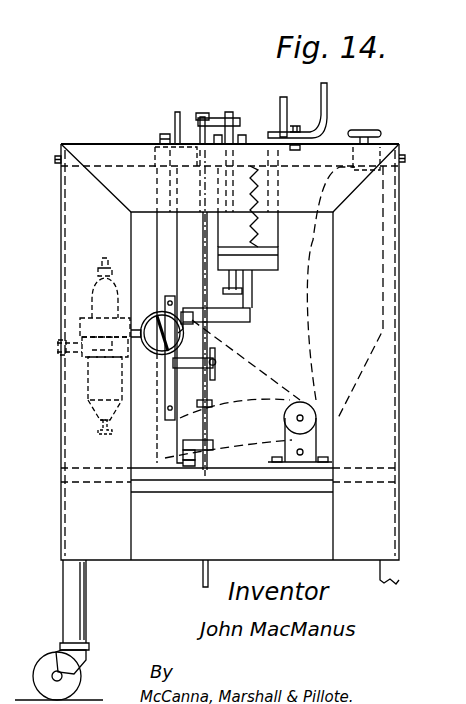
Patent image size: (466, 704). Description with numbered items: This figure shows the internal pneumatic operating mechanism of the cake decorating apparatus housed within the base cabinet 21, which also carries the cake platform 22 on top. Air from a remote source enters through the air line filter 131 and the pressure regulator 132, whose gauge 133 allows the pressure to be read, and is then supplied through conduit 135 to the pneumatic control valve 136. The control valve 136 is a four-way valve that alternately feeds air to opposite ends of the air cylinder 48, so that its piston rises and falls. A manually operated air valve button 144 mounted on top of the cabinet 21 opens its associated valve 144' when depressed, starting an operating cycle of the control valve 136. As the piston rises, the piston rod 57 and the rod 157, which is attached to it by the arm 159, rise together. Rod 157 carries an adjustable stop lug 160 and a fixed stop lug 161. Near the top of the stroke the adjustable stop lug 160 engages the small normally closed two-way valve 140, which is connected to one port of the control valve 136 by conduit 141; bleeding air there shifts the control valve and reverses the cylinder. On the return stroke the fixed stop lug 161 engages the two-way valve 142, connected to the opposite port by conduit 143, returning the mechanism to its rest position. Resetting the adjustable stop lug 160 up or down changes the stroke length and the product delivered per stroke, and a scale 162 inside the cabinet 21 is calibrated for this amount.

The base cabinet 21 is at (58, 521).
The cake platform 22 is at (332, 124).
The air cylinder 48 is at (266, 296).
The piston rod 57 is at (238, 115).
The air line filter 131 is at (90, 392).
The pressure regulator 132 is at (92, 300).
The gauge 133 is at (150, 312).
The conduit 135 is at (148, 405).
The pneumatic control valve 136 is at (318, 440).
The two-way valve 140 is at (188, 307).
The conduit 141 is at (260, 358).
The two-way valve 142 is at (188, 466).
The conduit 143 is at (363, 367).
The air valve button 144 is at (380, 125).
The valve 144' is at (418, 167).
The rod 157 is at (212, 120).
The arm 159 is at (190, 132).
The adjustable stop lug 160 is at (216, 368).
The fixed stop lug 161 is at (216, 446).
The scale 162 is at (205, 399).